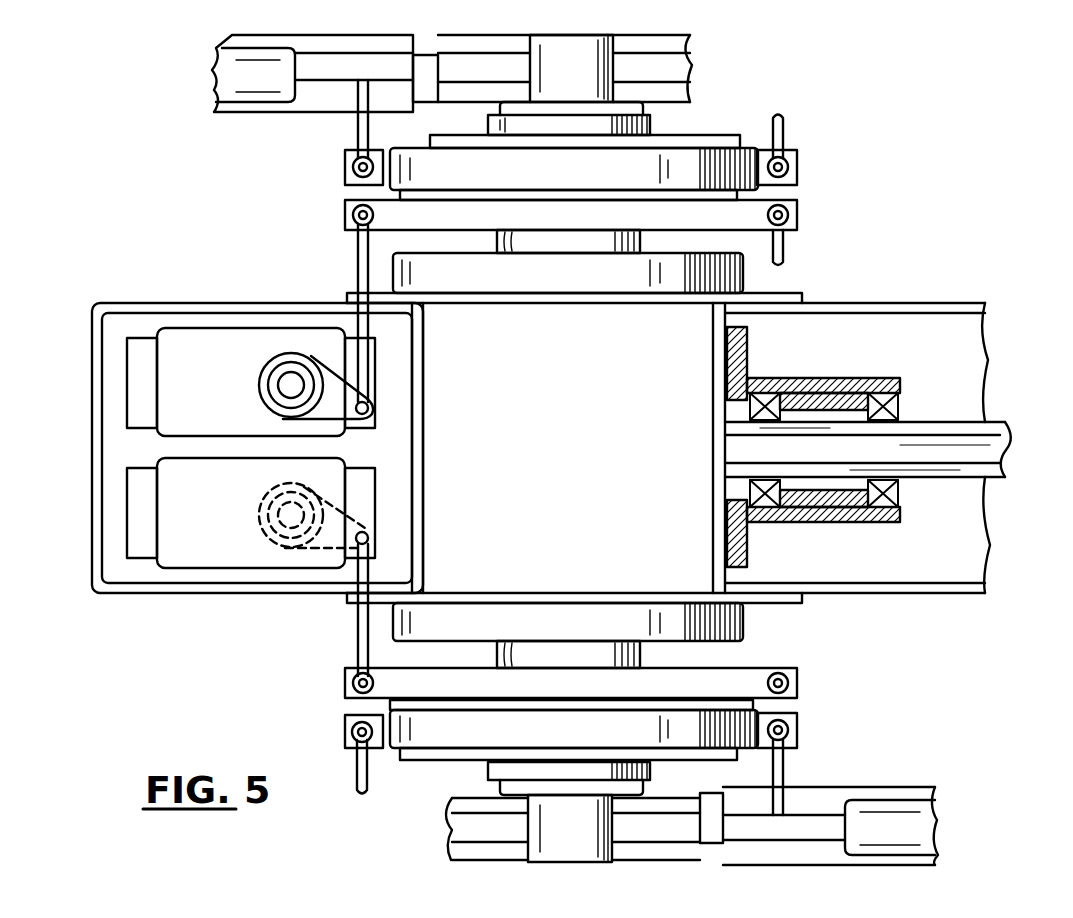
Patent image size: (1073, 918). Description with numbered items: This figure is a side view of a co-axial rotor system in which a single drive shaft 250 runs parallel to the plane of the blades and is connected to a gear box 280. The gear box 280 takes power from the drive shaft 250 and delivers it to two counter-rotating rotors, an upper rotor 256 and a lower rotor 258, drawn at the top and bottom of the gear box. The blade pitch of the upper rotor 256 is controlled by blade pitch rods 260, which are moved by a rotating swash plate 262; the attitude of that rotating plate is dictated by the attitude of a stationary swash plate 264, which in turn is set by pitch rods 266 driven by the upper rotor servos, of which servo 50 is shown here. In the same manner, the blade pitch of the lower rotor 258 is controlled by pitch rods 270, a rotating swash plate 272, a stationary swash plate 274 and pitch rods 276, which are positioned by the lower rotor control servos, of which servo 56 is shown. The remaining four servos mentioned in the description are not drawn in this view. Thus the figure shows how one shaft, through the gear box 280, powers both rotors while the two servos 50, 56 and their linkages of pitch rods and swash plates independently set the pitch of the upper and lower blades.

The upper rotor servo 50 is at (226, 399).
The control servo 56 is at (231, 526).
The drive shaft 250 is at (990, 415).
The upper rotor 256 is at (232, 40).
The lower rotor 258 is at (937, 865).
The blade pitch rods 260 is at (355, 137).
The rotating swash plate 262 is at (799, 160).
The swash plate 264 is at (798, 218).
The pitch rods 266 is at (785, 258).
The pitch rods 270 is at (785, 772).
The rotating swash plate 272 is at (797, 728).
The stationary swash plate 274 is at (798, 682).
The pitch rods 276 is at (352, 636).
The gear box 280 is at (584, 441).